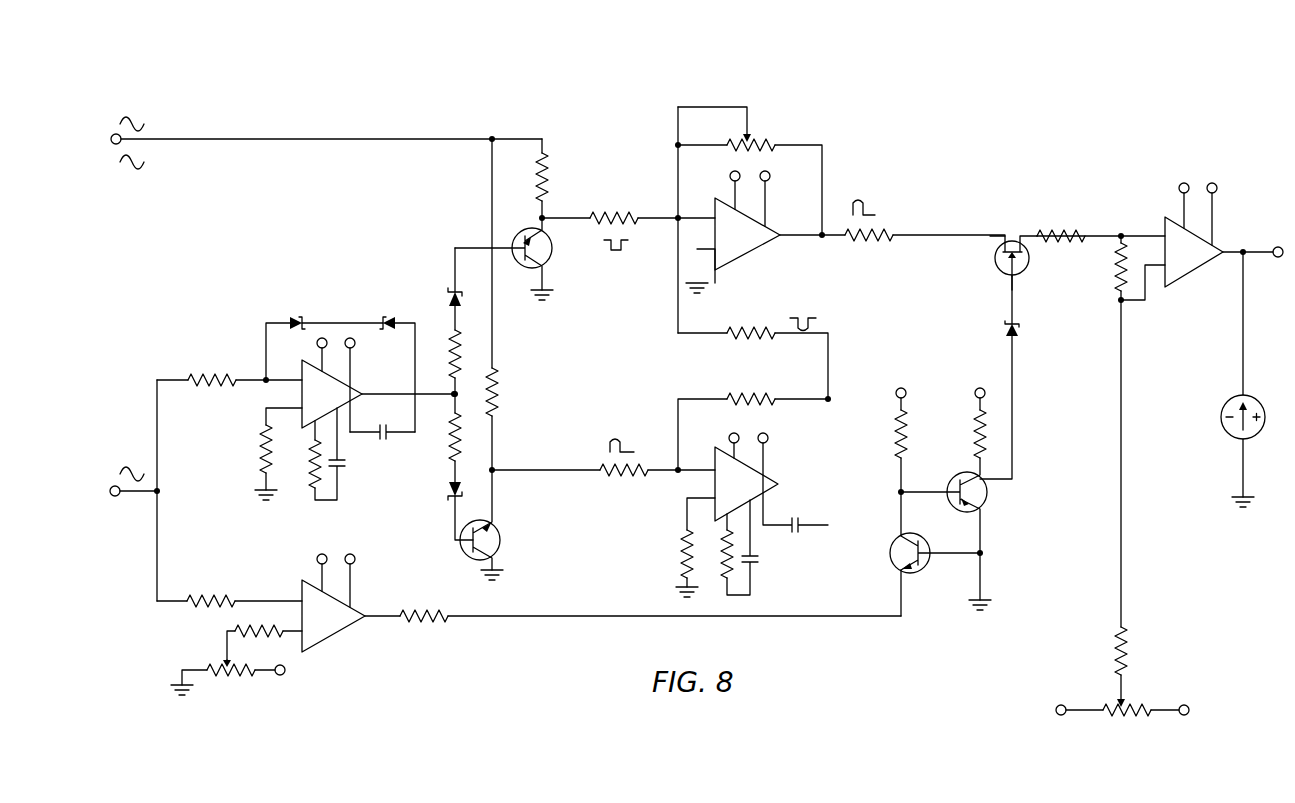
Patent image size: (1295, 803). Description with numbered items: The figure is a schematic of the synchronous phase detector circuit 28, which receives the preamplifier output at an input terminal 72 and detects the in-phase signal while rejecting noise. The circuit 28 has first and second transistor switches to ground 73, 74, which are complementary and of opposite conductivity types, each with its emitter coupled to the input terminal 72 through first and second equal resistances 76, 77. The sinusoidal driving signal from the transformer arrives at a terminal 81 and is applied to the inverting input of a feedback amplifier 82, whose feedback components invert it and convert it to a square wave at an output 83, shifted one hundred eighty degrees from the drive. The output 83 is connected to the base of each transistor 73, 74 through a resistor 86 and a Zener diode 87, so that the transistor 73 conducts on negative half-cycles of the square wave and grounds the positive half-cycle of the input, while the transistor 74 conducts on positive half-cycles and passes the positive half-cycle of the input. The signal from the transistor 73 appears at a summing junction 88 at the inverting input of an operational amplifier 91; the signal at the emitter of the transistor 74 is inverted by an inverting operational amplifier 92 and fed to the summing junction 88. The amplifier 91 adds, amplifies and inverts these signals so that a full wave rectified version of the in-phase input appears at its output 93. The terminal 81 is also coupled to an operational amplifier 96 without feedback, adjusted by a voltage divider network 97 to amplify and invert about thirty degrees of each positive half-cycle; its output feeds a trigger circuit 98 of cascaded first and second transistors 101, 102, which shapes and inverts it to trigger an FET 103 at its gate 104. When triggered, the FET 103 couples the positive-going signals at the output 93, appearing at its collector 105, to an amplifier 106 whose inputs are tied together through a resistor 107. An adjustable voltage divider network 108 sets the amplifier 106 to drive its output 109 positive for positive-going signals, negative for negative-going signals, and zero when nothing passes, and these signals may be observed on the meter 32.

The synchronous phase detector circuit 28 is at (547, 88).
The input terminal 72 is at (112, 143).
The first resistance 76 is at (546, 186).
The first transistor switch 73 is at (553, 259).
The summing junction 88 is at (676, 218).
The second resistance 77 is at (498, 389).
The Zener diode 87 is at (457, 292).
The resistor 86 is at (457, 353).
The second transistor switch 74 is at (500, 533).
The terminal 81 is at (112, 498).
The feedback amplifier 82 is at (358, 392).
The output of amplifier 82 83 is at (394, 426).
The operational amplifier 96 is at (355, 612).
The voltage divider network 97 is at (212, 656).
The operational amplifier 91 is at (772, 230).
The output of amplifier 91 93 is at (822, 240).
The inverting operational amplifier 92 is at (772, 482).
The trigger circuit 98 is at (932, 622).
The first transistor 101 is at (892, 565).
The second transistor 102 is at (957, 473).
The FET 103 is at (1013, 231).
The collector of the FET 105 is at (1003, 243).
The gate of the FET 104 is at (1010, 280).
The resistor 107 is at (1113, 275).
The amplifier 106 is at (1216, 246).
The output of amplifier 106 109 is at (1245, 249).
The meter 32 is at (1232, 398).
The adjustable voltage divider network 108 is at (1150, 684).